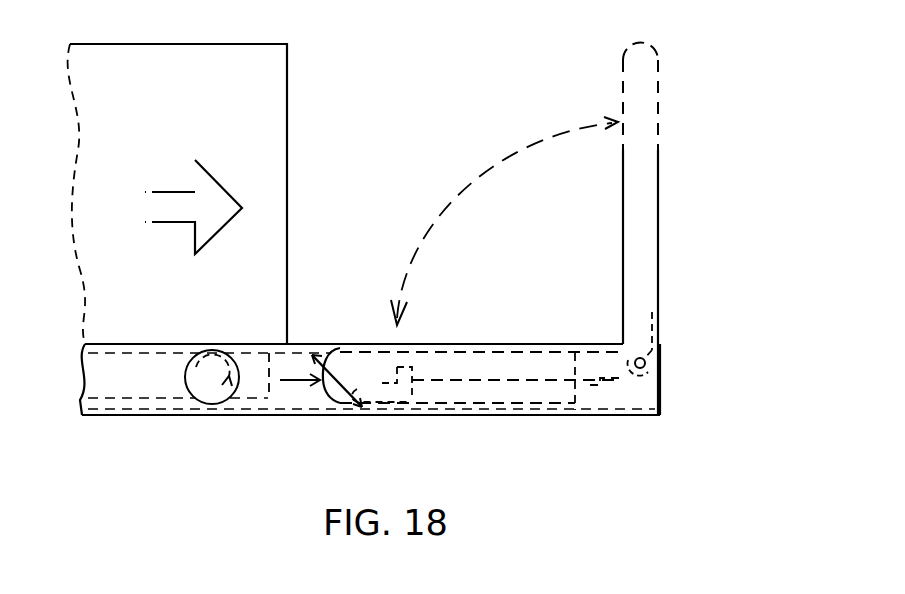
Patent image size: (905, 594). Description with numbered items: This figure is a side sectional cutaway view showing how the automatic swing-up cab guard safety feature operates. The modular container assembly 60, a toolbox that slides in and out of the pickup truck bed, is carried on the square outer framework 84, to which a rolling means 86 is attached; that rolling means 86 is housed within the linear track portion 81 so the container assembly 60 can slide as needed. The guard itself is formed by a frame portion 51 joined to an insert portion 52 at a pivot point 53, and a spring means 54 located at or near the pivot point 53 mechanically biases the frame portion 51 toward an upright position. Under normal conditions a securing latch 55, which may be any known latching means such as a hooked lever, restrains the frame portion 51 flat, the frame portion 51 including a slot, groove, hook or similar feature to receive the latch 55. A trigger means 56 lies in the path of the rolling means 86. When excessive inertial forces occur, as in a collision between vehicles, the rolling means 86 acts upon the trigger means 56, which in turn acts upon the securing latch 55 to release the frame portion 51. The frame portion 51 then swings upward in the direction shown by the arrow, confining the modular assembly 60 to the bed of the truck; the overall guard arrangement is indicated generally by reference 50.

The panel assembly 50 is at (670, 170).
The frame portion 51 is at (632, 92).
The insert portion 52 is at (617, 400).
The pivot point 53 is at (655, 370).
The spring means 54 is at (655, 333).
The securing latch 55 is at (410, 395).
The trigger means 56 is at (320, 395).
The modular container assembly 60 is at (277, 88).
The linear track portion 81 is at (100, 417).
The square outer framework 84 is at (248, 388).
The rolling means 86 is at (203, 388).